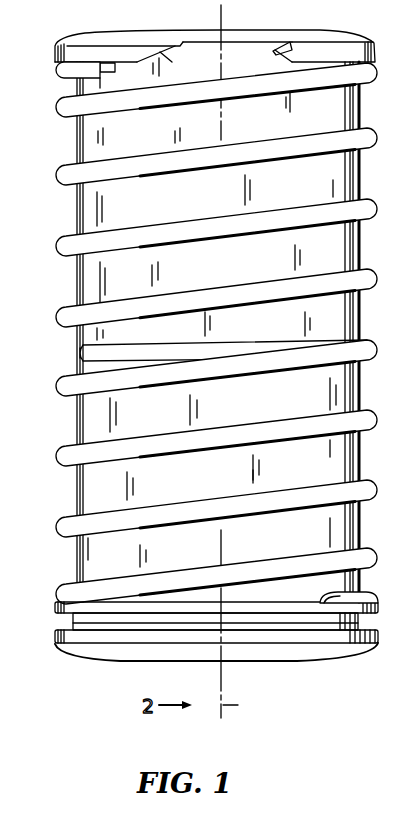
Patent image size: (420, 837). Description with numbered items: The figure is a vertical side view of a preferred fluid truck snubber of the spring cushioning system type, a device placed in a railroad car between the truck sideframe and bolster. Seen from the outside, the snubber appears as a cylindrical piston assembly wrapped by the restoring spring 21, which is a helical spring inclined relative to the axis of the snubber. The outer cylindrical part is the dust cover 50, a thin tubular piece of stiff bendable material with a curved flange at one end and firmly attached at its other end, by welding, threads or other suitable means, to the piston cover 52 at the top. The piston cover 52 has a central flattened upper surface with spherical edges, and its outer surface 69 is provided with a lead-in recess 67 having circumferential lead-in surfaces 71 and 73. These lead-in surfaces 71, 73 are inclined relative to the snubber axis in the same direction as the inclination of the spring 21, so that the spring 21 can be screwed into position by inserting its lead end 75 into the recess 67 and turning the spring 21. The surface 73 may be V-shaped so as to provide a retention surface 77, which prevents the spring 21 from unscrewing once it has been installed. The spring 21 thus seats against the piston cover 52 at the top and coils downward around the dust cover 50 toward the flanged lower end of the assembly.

The restoring spring 21 is at (363, 353).
The dust cover 50 is at (330, 258).
The piston cover 52 is at (191, 43).
The lead-in recess 67 is at (192, 41).
The outer surface 69 is at (331, 53).
The circumferential lead-in surface 71 is at (165, 53).
The circumferential lead-in surface 73 is at (283, 43).
The lead end 75 is at (343, 600).
The retention surface 77 is at (272, 51).